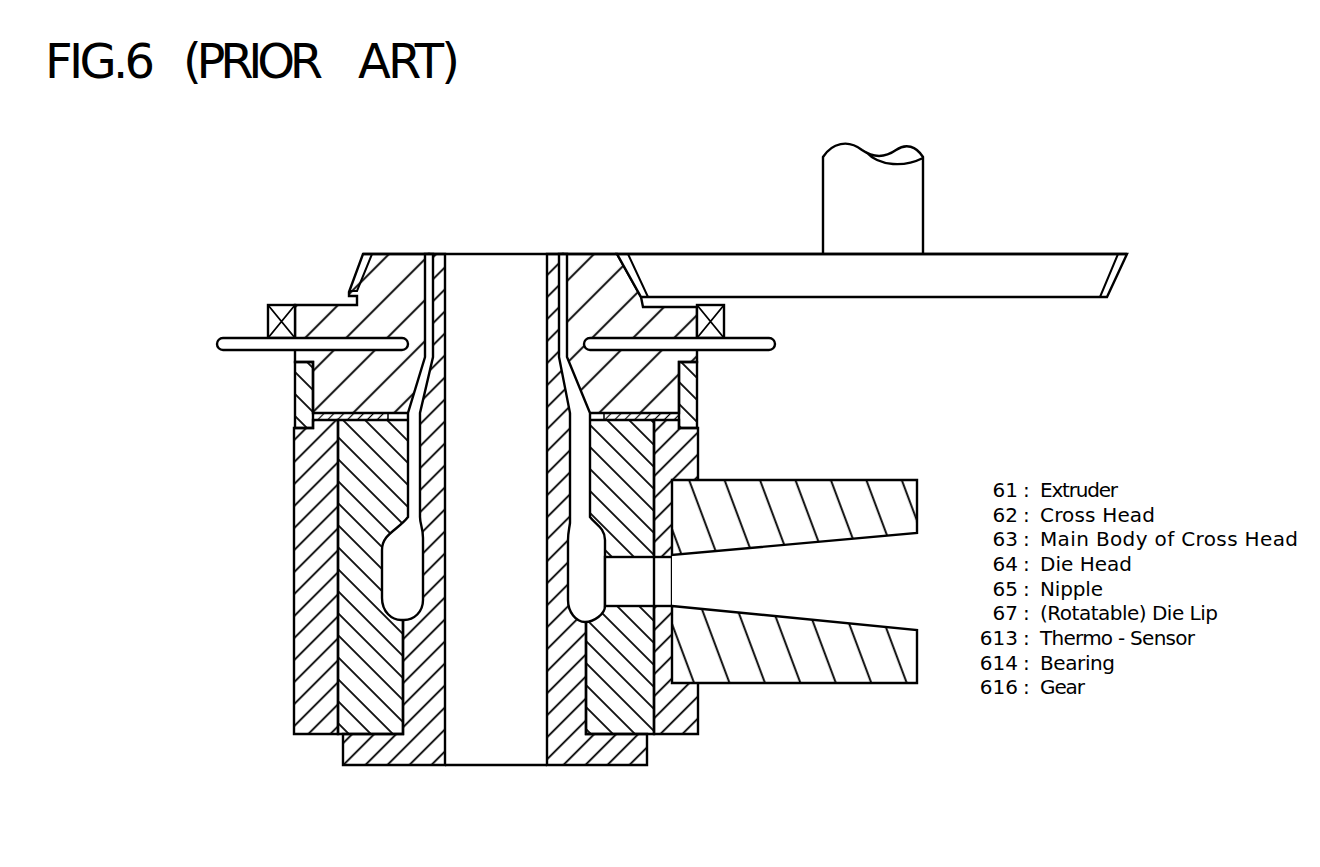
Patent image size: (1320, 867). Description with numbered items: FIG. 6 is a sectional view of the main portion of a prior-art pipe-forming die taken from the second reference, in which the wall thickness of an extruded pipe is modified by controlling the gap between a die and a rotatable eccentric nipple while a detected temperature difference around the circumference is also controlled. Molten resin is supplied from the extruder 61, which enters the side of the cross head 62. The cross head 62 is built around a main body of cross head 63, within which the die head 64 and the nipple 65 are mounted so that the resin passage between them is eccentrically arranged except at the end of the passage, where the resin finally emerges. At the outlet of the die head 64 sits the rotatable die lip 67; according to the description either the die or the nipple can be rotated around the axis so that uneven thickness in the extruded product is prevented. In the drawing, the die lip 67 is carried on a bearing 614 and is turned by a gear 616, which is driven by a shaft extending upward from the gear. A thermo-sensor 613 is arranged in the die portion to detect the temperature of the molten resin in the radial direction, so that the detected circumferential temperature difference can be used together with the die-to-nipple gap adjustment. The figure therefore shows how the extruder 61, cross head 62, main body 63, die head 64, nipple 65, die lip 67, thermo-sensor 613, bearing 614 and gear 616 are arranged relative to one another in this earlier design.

The Extruder 61 is at (866, 668).
The cross head 62 is at (260, 491).
The Main Body of Cross Head 63 is at (300, 580).
The die 64 is at (353, 640).
The nipple 65 is at (408, 693).
The (Rotatable) Die Lip 67 is at (397, 273).
The Thermo-Sensor 613 is at (243, 337).
The Bearing 614 is at (284, 306).
The Gear 616 is at (691, 254).